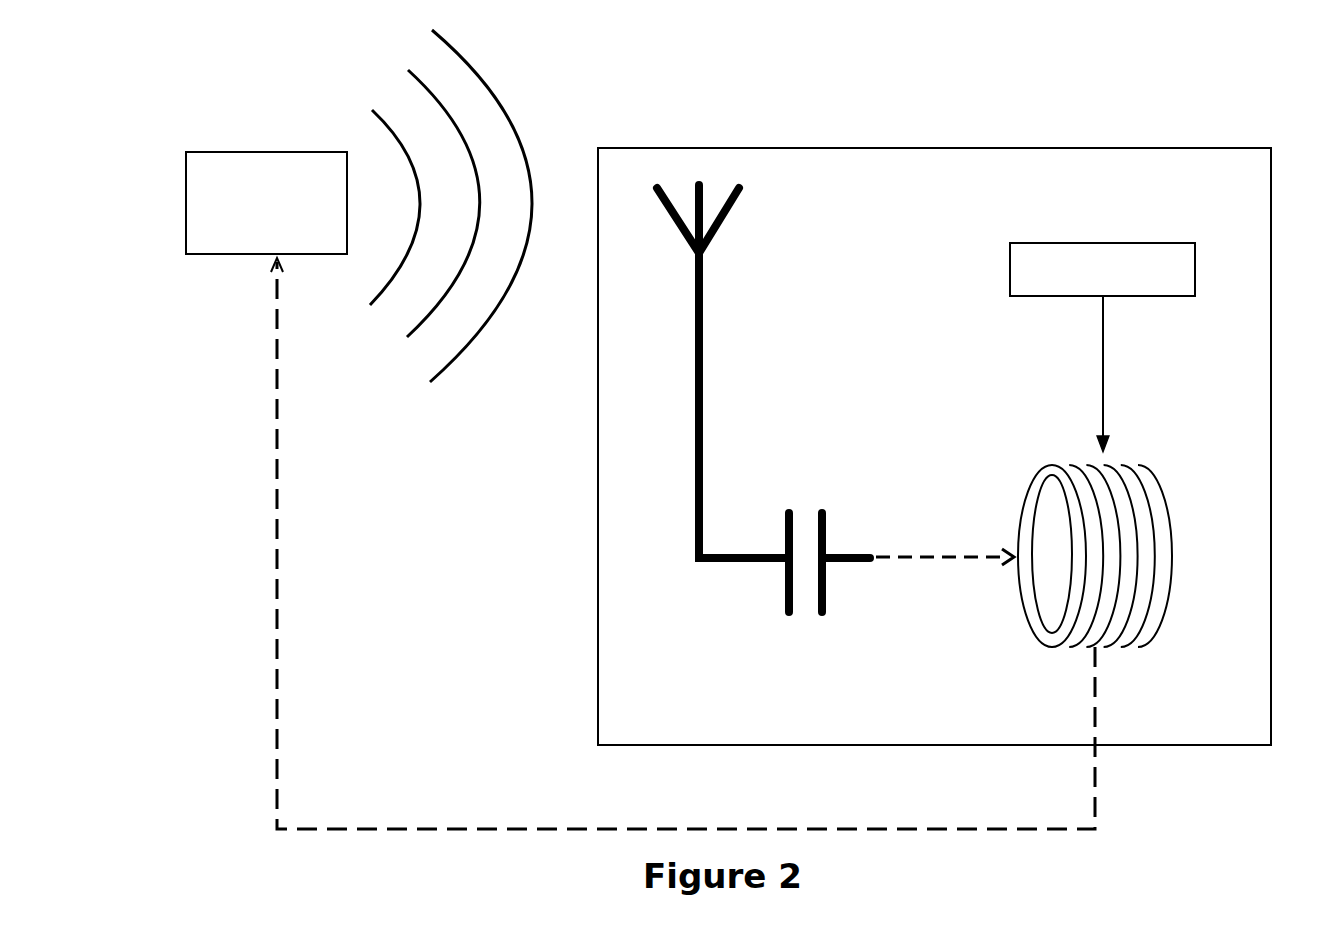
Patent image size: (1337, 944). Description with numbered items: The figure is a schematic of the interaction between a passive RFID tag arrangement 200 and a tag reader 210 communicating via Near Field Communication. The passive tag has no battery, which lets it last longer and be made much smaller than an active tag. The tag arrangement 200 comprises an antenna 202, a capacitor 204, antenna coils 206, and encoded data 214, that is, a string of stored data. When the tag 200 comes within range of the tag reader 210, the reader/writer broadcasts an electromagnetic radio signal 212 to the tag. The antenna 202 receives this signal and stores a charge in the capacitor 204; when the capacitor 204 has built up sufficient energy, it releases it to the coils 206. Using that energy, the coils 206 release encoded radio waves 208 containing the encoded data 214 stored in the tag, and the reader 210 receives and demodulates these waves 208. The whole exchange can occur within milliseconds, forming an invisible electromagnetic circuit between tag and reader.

The passive RFID tag arrangement 200 is at (958, 132).
The antenna 202 is at (744, 247).
The capacitor 204 is at (765, 627).
The antenna coils 206 is at (1061, 442).
The encoded radio waves 208 is at (498, 811).
The tag reader 210 is at (209, 128).
The electromagnetic radio signal 212 is at (437, 412).
The encoded data 214 is at (999, 276).